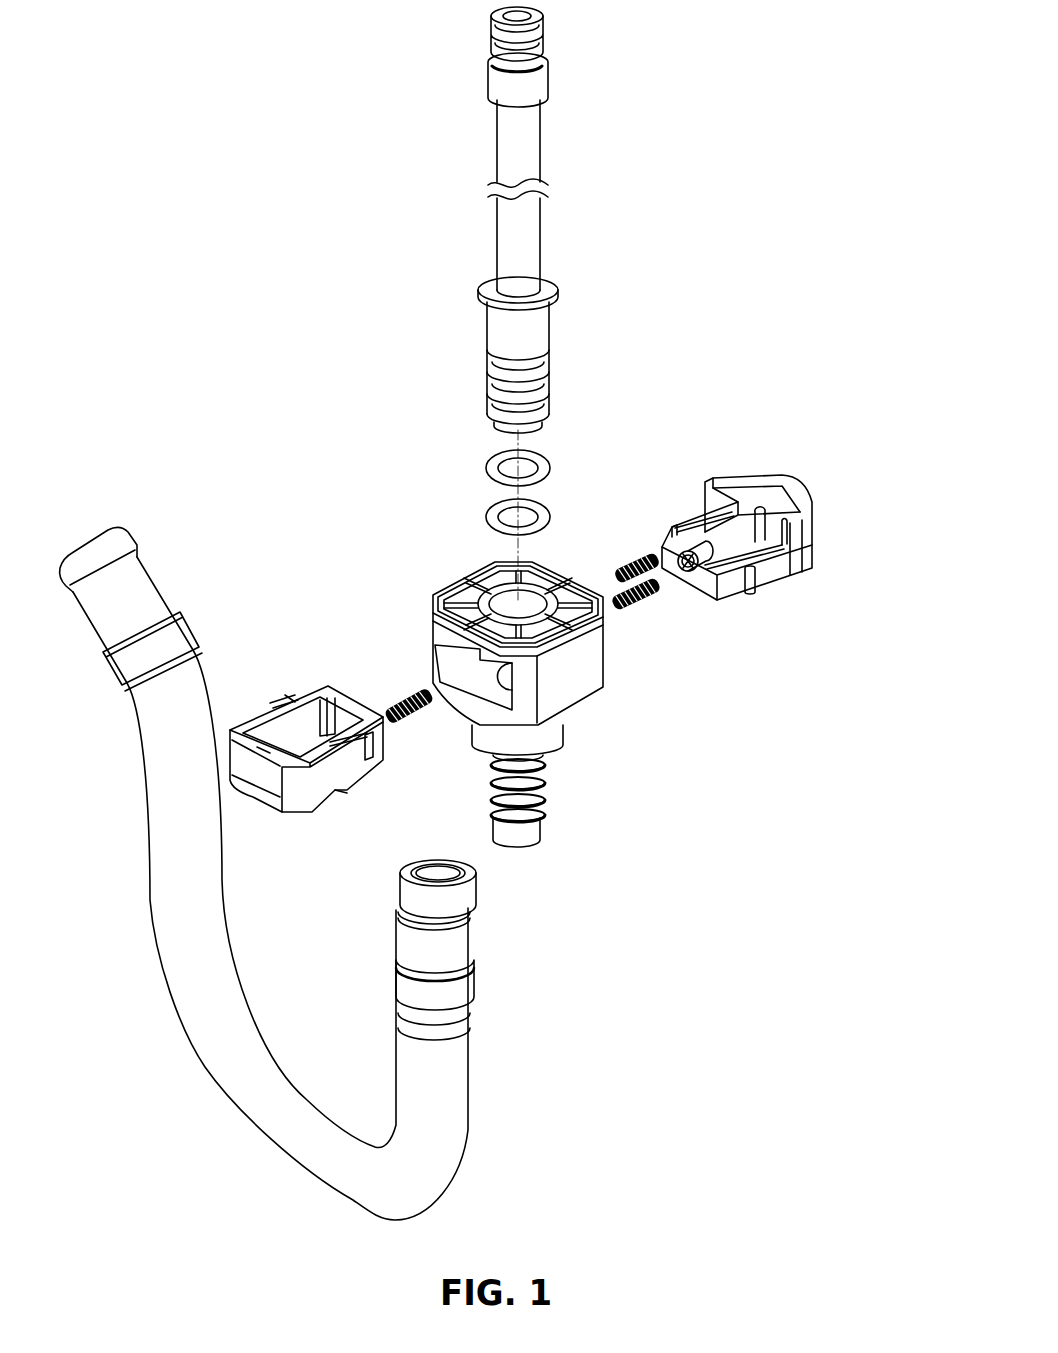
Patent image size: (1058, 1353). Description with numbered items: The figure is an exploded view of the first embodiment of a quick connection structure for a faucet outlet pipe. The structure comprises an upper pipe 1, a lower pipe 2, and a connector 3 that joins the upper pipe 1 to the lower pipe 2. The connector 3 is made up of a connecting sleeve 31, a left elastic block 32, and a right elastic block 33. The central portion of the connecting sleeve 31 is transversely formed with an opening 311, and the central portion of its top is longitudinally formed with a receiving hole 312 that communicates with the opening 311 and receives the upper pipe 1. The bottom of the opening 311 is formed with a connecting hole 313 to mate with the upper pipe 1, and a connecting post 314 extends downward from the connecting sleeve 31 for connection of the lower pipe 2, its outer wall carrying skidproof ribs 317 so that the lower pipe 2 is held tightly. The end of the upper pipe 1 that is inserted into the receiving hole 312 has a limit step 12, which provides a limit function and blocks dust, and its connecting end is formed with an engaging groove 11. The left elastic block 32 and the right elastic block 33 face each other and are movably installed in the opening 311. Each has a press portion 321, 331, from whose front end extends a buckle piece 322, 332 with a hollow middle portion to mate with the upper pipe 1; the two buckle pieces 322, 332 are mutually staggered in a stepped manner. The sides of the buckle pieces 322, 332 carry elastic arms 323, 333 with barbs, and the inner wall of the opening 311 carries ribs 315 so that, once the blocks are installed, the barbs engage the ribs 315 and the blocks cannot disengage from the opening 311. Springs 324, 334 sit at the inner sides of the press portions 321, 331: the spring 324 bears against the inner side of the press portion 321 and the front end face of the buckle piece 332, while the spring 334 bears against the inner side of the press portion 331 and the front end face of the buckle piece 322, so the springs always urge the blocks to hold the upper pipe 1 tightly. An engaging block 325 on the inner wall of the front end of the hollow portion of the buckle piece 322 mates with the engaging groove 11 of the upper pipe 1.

The upper pipe 1 is at (530, 248).
The engaging groove 11 is at (540, 356).
The limit step 12 is at (553, 291).
The lower pipe 2 is at (195, 1003).
The connector 3 is at (800, 440).
The connecting sleeve 31 is at (544, 707).
The opening 311 is at (478, 692).
The receiving hole 312 is at (562, 585).
The connecting hole 313 is at (508, 673).
The connecting post 314 is at (538, 818).
The ribs 315 is at (484, 577).
The skidproof ribs 317 is at (518, 814).
The left elastic block 32 is at (229, 746).
The press portion 321 is at (240, 765).
The buckle piece 322 is at (290, 745).
The elastic arm 323 is at (350, 765).
The spring 324 is at (413, 718).
The engaging block 325 is at (340, 720).
The right elastic block 33 is at (774, 540).
The press portion 331 is at (780, 495).
The buckle piece 332 is at (758, 579).
The elastic arm 333 is at (780, 569).
The spring 334 is at (660, 596).